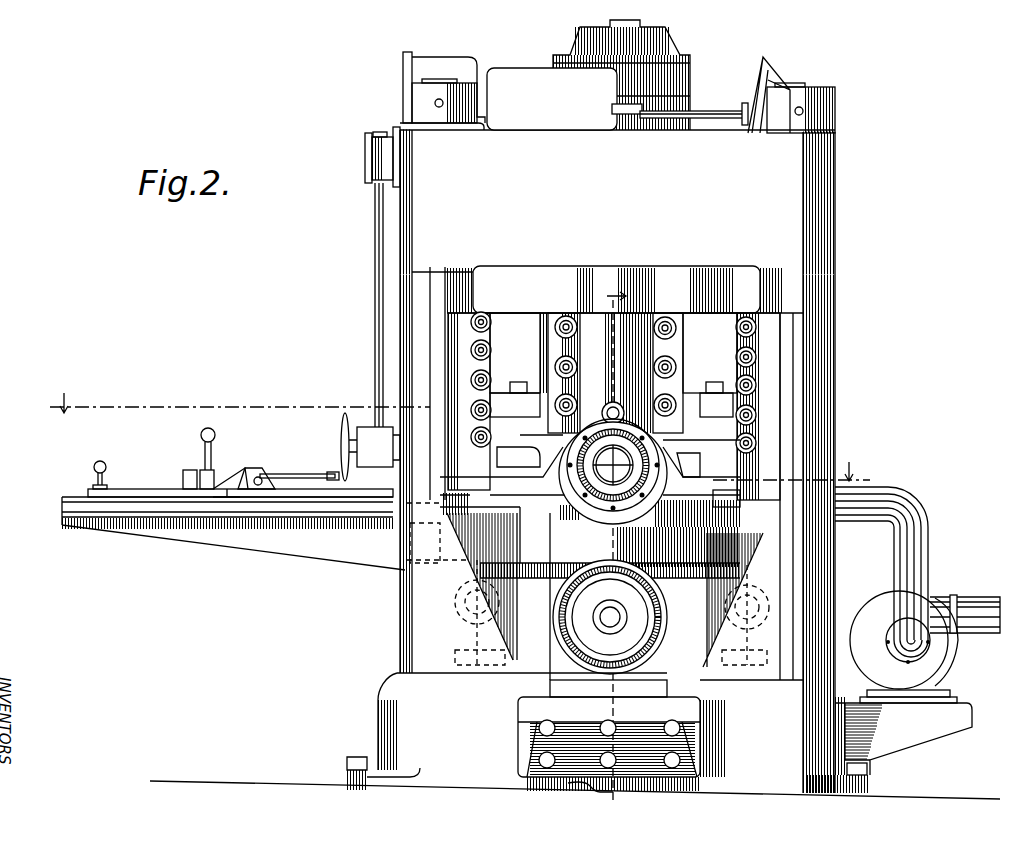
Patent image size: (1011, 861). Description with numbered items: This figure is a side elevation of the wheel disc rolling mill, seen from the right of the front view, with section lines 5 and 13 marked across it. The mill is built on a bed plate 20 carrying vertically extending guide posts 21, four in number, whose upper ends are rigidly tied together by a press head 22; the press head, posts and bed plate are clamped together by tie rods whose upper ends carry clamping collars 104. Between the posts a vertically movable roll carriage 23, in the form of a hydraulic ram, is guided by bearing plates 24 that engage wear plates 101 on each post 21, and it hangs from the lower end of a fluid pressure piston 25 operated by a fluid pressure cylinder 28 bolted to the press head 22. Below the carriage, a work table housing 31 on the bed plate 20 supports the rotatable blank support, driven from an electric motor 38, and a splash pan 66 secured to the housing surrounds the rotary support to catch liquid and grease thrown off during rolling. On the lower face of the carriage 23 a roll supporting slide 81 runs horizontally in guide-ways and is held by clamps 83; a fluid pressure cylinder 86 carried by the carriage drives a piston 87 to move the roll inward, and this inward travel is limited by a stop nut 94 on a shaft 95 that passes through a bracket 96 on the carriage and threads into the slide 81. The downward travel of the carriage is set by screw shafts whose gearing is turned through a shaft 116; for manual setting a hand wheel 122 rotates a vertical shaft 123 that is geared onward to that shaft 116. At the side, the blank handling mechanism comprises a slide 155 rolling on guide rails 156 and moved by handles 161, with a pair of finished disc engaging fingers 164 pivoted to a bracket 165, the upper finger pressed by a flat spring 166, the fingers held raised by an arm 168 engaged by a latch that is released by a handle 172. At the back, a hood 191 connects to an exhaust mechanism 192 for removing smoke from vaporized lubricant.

The section line 5- 5 is at (590, 544).
The section line 13- 13 is at (460, 426).
The bed plate 20 is at (392, 719).
The guide posts 21 is at (410, 373).
The press head 22 is at (790, 222).
The roll carriage 23 is at (717, 326).
The bearing plates 24 is at (470, 320).
The fluid pressure piston 25 is at (645, 299).
The fluid pressure cylinder 28 is at (668, 135).
The housing 31 is at (560, 580).
The electric motor 38 is at (592, 573).
The splash pan 66 is at (532, 520).
The roll supporting slide 81 is at (540, 466).
The clamps 83 is at (680, 470).
The fluid pressure cylinder 86 is at (640, 440).
The piston 87 is at (625, 462).
The stop nut 94 is at (606, 404).
The shaft 95 is at (622, 406).
The bracket 96 is at (566, 350).
The wear plates 101 is at (467, 290).
The clamping collars 104 is at (420, 104).
The shaft 116 is at (714, 111).
The hand wheel 122 is at (343, 432).
The vertical shaft 123 is at (380, 334).
The slide 155 is at (143, 497).
The guide rails 156 is at (138, 524).
The handles 161 is at (106, 471).
The finished disc engaging fingers 164 is at (290, 497).
The bracket 165 is at (225, 500).
The flat spring 166 is at (262, 470).
The arm 168 is at (235, 473).
The handle 172 is at (215, 438).
The hood 191 is at (713, 500).
The exhaust mechanism 192 is at (940, 598).